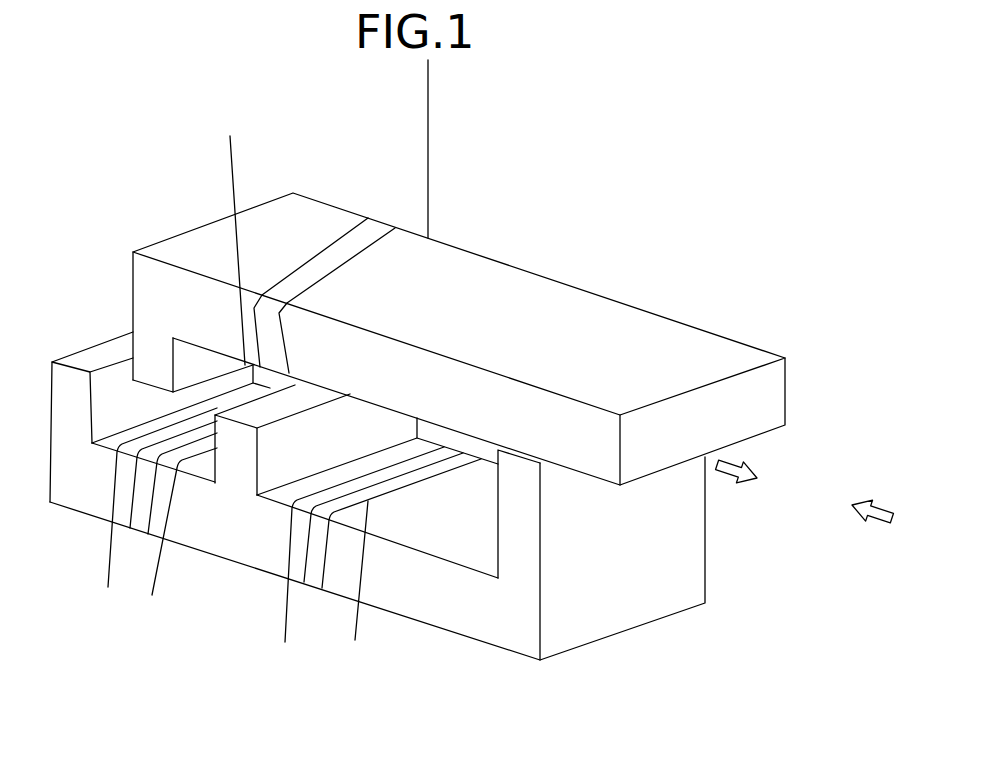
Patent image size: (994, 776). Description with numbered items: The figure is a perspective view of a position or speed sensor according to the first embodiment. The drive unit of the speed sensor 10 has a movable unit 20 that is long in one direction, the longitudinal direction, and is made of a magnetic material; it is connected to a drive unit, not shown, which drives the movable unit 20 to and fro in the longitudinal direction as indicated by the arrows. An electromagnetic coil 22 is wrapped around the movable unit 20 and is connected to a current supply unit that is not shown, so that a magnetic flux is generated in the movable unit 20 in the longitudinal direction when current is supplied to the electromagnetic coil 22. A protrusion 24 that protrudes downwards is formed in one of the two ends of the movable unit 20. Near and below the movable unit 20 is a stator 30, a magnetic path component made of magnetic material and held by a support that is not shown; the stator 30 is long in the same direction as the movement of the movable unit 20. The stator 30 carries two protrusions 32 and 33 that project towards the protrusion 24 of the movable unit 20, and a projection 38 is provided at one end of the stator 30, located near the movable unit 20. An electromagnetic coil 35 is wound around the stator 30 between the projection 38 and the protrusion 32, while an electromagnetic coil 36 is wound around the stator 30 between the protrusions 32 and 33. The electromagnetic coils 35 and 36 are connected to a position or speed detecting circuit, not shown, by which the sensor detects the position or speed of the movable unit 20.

The speed sensor 10 is at (513, 226).
The movable unit 20 is at (645, 333).
The electromagnetic coil 22 is at (337, 238).
The protrusion 24 is at (145, 367).
The stator 30 is at (500, 622).
The protrusion 32 is at (233, 447).
The protrusion 33 is at (53, 358).
The electromagnetic coil 35 is at (355, 640).
The electromagnetic coil 36 is at (152, 595).
The projection 38 is at (518, 493).